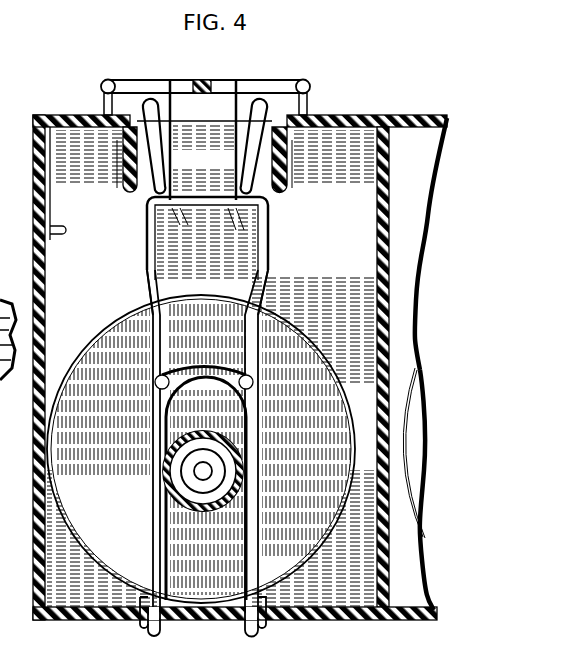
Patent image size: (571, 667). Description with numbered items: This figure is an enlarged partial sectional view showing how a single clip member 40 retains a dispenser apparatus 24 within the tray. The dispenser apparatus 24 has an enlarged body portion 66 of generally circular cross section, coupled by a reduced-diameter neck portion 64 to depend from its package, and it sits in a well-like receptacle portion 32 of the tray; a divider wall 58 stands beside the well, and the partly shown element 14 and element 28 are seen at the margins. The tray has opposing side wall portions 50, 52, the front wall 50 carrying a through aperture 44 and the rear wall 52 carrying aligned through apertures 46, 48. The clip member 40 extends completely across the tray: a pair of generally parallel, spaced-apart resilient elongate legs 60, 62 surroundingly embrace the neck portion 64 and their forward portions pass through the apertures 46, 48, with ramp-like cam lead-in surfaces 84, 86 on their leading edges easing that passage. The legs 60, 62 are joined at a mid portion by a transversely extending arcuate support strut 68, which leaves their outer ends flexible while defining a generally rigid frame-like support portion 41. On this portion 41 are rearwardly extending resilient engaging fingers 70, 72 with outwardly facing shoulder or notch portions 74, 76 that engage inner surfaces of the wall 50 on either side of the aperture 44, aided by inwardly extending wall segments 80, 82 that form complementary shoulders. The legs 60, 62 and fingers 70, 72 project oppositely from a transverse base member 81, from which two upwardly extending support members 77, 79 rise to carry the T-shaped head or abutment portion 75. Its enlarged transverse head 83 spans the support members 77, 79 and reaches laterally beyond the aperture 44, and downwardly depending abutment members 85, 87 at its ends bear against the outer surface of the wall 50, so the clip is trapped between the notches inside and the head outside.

The tape 14 is at (30, 555).
The dispenser apparatus 24 is at (105, 560).
The hub 28 is at (145, 297).
The receptacle portion 32 is at (410, 482).
The clip member 40 is at (168, 78).
The frame-like support portion 41 is at (268, 239).
The through aperture 44 is at (208, 122).
The through aperture 46 is at (242, 628).
The through aperture 48 is at (165, 626).
The side wall portion 50 is at (52, 114).
The side wall portion 52 is at (355, 622).
The divider wall 58 is at (415, 222).
The resilient elongate leg 60 is at (150, 490).
The resilient elongate leg 62 is at (258, 505).
The neck portion 64 is at (236, 512).
The enlarged body portion 66 is at (287, 333).
The arcuate support strut 68 is at (196, 368).
The resilient engaging finger 70 is at (150, 185).
The resilient engaging finger 72 is at (262, 185).
The shoulder or notch portion 74 is at (137, 138).
The T-shaped head or abutment portion 75 is at (294, 72).
The shoulder or notch portion 76 is at (290, 135).
The upwardly extending support member 77 is at (185, 205).
The upwardly extending support member 79 is at (236, 203).
The inwardly extending wall segment 80 is at (124, 170).
The base member 81 is at (206, 243).
The inwardly extending wall segment 82 is at (285, 158).
The enlarged head or end portion 83 is at (233, 82).
The cam lead-in surface 84 is at (150, 628).
The abutment member 85 is at (312, 104).
The cam lead-in surface 86 is at (262, 628).
The abutment member 87 is at (104, 90).